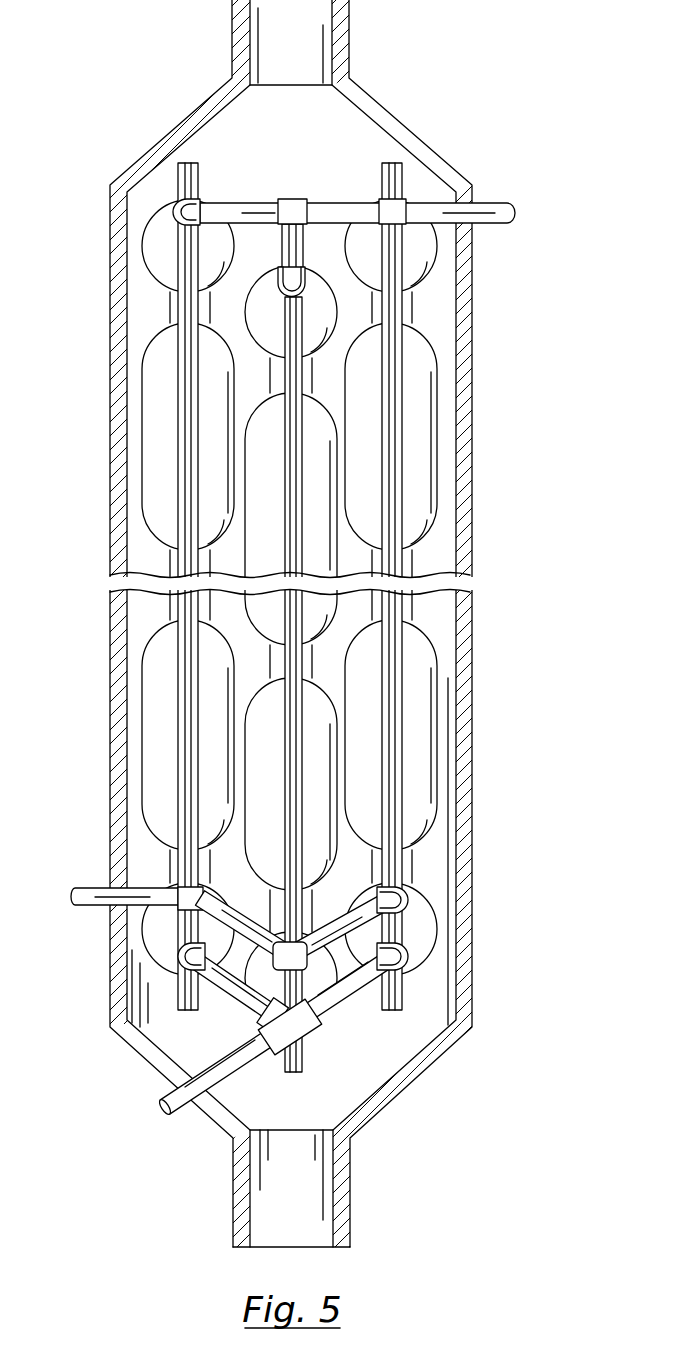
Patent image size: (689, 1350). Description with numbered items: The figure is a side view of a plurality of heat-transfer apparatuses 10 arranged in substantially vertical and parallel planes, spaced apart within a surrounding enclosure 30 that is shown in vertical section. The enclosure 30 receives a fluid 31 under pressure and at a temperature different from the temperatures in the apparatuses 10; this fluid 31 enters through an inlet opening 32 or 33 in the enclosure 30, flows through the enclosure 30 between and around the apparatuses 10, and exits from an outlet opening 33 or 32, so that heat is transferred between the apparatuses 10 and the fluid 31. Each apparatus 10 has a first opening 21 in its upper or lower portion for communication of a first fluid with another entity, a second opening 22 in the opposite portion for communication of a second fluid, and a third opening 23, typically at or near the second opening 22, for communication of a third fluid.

The apparatus 10 is at (333, 240).
The first opening 21 is at (517, 214).
The second opening 22 is at (160, 1106).
The third opening 23 is at (73, 890).
The surrounding enclosure 30 is at (213, 101).
The fluid 31 is at (263, 157).
The inlet or outlet opening 32 is at (308, 1201).
The inlet or outlet opening 33 is at (307, 51).